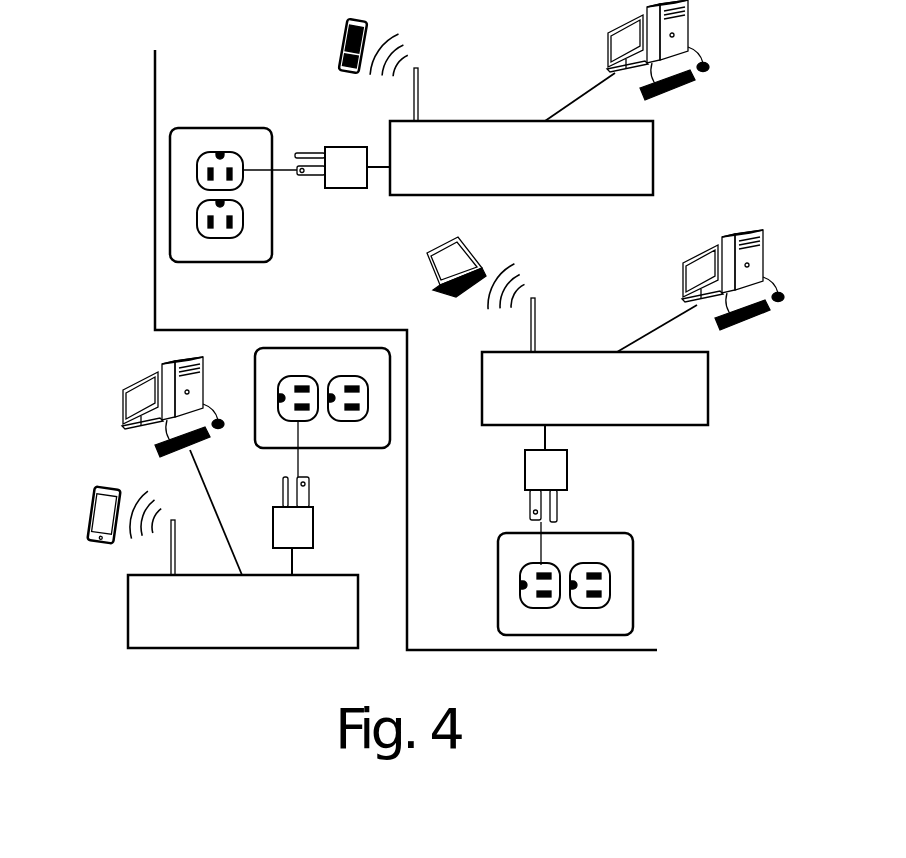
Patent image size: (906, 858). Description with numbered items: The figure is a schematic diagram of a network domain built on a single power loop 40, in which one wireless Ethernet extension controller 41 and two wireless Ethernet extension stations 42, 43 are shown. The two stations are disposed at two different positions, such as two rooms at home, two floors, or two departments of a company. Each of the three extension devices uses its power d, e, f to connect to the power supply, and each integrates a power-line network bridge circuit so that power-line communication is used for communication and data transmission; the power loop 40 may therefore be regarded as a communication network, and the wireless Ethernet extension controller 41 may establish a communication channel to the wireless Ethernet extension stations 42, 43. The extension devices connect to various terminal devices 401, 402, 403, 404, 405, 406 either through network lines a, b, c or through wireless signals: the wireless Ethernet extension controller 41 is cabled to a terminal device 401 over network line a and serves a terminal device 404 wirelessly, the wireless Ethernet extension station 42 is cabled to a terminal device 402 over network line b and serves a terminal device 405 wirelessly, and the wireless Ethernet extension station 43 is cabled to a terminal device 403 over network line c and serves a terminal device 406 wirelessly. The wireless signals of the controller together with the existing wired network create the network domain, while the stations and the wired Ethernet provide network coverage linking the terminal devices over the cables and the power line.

The power loop 40 is at (152, 90).
The wireless Ethernet extension controller 41 is at (465, 121).
The wireless Ethernet extension station 42 is at (710, 386).
The wireless Ethernet extension station 43 is at (128, 606).
The terminal device 401 is at (690, 34).
The terminal device 402 is at (746, 233).
The terminal device 403 is at (143, 377).
The terminal device 404 is at (343, 47).
The terminal device 405 is at (427, 275).
The terminal device 406 is at (90, 517).
The network line a is at (583, 93).
The network line b is at (651, 329).
The network line c is at (220, 512).
The power d is at (383, 166).
The power e is at (543, 437).
The power f is at (296, 564).